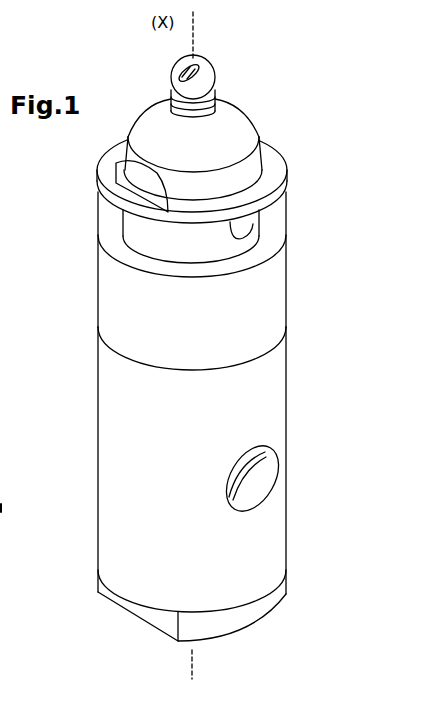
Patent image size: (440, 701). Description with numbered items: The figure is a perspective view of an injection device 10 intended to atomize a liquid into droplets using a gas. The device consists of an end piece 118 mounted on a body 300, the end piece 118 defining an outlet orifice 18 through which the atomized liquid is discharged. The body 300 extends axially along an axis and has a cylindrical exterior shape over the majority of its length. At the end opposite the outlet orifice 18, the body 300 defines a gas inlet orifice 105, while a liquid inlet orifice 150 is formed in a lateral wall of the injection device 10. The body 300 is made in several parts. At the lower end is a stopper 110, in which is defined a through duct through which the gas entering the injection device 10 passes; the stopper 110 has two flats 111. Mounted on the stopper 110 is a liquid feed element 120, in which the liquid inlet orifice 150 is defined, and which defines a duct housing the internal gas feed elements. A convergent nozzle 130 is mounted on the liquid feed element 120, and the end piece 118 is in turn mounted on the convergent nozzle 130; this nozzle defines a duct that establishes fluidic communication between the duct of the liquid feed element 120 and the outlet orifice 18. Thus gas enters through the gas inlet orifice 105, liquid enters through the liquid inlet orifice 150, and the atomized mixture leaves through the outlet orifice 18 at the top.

The injection device 10 is at (58, 329).
The outlet orifice 18 is at (204, 52).
The end piece 118 is at (233, 121).
The body 300 is at (286, 302).
The convergent nozzle 130 is at (286, 320).
The liquid inlet orifice 150 is at (270, 478).
The liquid feed element 120 is at (286, 547).
The stopper 110 is at (286, 597).
The flats 111 is at (100, 590).
The gas inlet orifice 105 is at (206, 658).